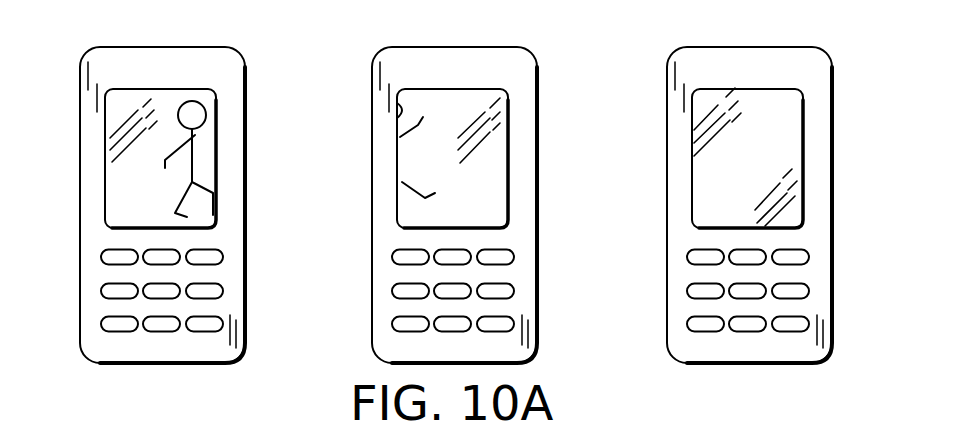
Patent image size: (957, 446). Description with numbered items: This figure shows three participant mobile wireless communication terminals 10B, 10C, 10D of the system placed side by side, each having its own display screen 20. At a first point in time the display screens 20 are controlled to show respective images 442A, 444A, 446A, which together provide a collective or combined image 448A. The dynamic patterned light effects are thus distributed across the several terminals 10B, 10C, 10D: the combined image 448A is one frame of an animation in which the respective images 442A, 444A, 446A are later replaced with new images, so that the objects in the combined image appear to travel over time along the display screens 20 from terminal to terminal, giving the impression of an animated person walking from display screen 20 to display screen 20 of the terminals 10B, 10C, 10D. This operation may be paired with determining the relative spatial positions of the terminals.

The participant terminal 10B is at (223, 47).
The participant terminal 10C is at (515, 47).
The participant terminal 10D is at (810, 47).
The display screen 20 is at (117, 213).
The image 442A is at (122, 105).
The image 444A is at (424, 105).
The image 446A is at (708, 105).
The combined image 448A is at (848, 156).